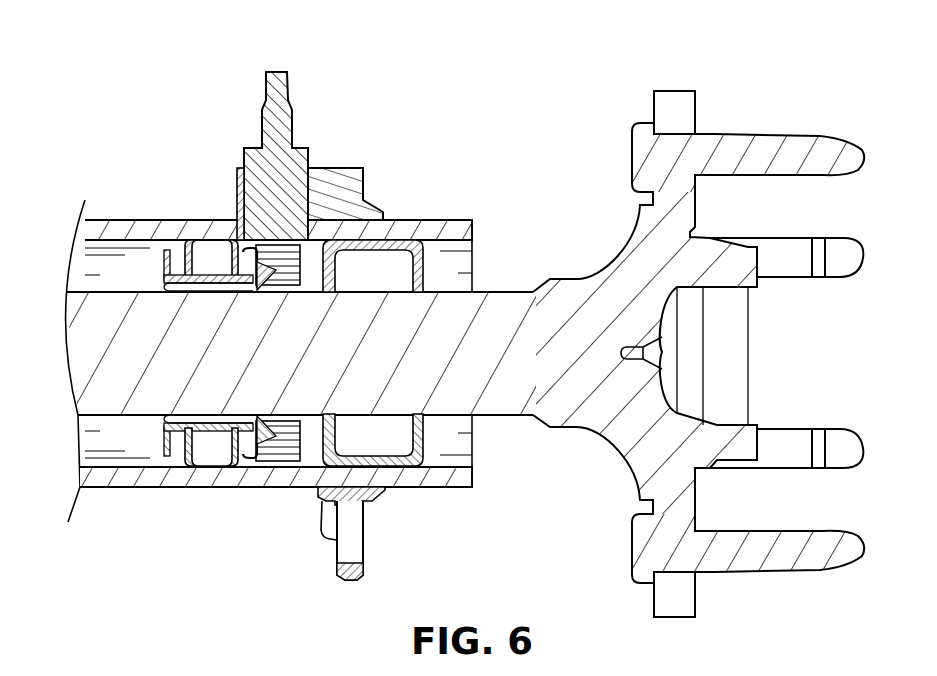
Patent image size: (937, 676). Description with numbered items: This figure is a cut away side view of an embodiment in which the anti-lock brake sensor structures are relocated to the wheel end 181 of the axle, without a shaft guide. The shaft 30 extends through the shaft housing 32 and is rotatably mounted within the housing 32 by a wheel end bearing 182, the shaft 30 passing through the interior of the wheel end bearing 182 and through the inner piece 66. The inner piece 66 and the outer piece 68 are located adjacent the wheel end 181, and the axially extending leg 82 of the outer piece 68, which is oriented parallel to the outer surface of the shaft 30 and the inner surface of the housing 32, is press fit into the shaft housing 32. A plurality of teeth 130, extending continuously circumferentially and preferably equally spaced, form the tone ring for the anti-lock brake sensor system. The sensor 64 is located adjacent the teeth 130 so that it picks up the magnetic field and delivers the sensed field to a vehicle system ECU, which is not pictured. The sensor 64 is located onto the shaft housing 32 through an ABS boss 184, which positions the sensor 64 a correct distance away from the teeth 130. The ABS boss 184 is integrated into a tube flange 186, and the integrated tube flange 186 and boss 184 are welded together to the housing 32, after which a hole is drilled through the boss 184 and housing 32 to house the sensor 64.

The shaft 30 is at (88, 360).
The shaft housing 32 is at (105, 487).
The sensor 64 is at (280, 70).
The inner piece 66 is at (163, 438).
The outer piece 68 is at (205, 467).
The axially extending leg 82 is at (213, 238).
The teeth 130 is at (282, 462).
The wheel end 181 is at (613, 463).
The wheel end bearing 182 is at (402, 255).
The ABS boss 184 is at (337, 168).
The tube flange 186 is at (363, 548).